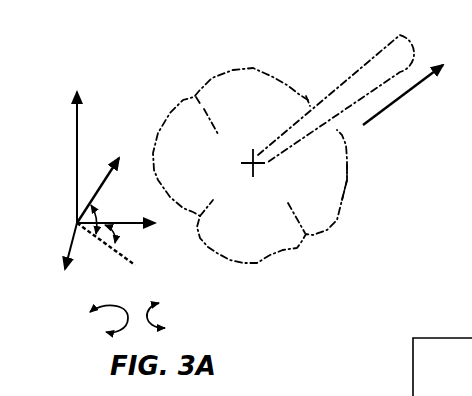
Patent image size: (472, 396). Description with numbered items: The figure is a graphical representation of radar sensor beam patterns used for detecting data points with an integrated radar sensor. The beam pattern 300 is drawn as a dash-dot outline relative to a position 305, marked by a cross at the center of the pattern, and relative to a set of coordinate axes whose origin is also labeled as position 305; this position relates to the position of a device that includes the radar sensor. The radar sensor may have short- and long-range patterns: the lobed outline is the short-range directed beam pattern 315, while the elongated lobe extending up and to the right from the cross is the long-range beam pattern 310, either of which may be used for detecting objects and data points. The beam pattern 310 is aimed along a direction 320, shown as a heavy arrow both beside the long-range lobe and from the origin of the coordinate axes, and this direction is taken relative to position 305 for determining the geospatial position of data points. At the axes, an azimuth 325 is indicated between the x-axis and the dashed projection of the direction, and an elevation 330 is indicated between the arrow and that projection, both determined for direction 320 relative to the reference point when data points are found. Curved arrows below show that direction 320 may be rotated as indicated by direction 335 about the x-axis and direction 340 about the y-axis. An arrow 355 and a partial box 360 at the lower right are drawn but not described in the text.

The beam pattern 300 is at (207, 59).
The position 305 is at (77, 222).
The beam pattern 310 is at (414, 41).
The directed beam pattern 315 is at (344, 200).
The direction 320 is at (100, 187).
The azimuth 325 is at (118, 247).
The elevation 330 is at (99, 214).
The direction 335 is at (108, 309).
The direction 340 is at (158, 307).
The view direction arrow 355 is at (459, 327).
The display window 360 is at (442, 367).